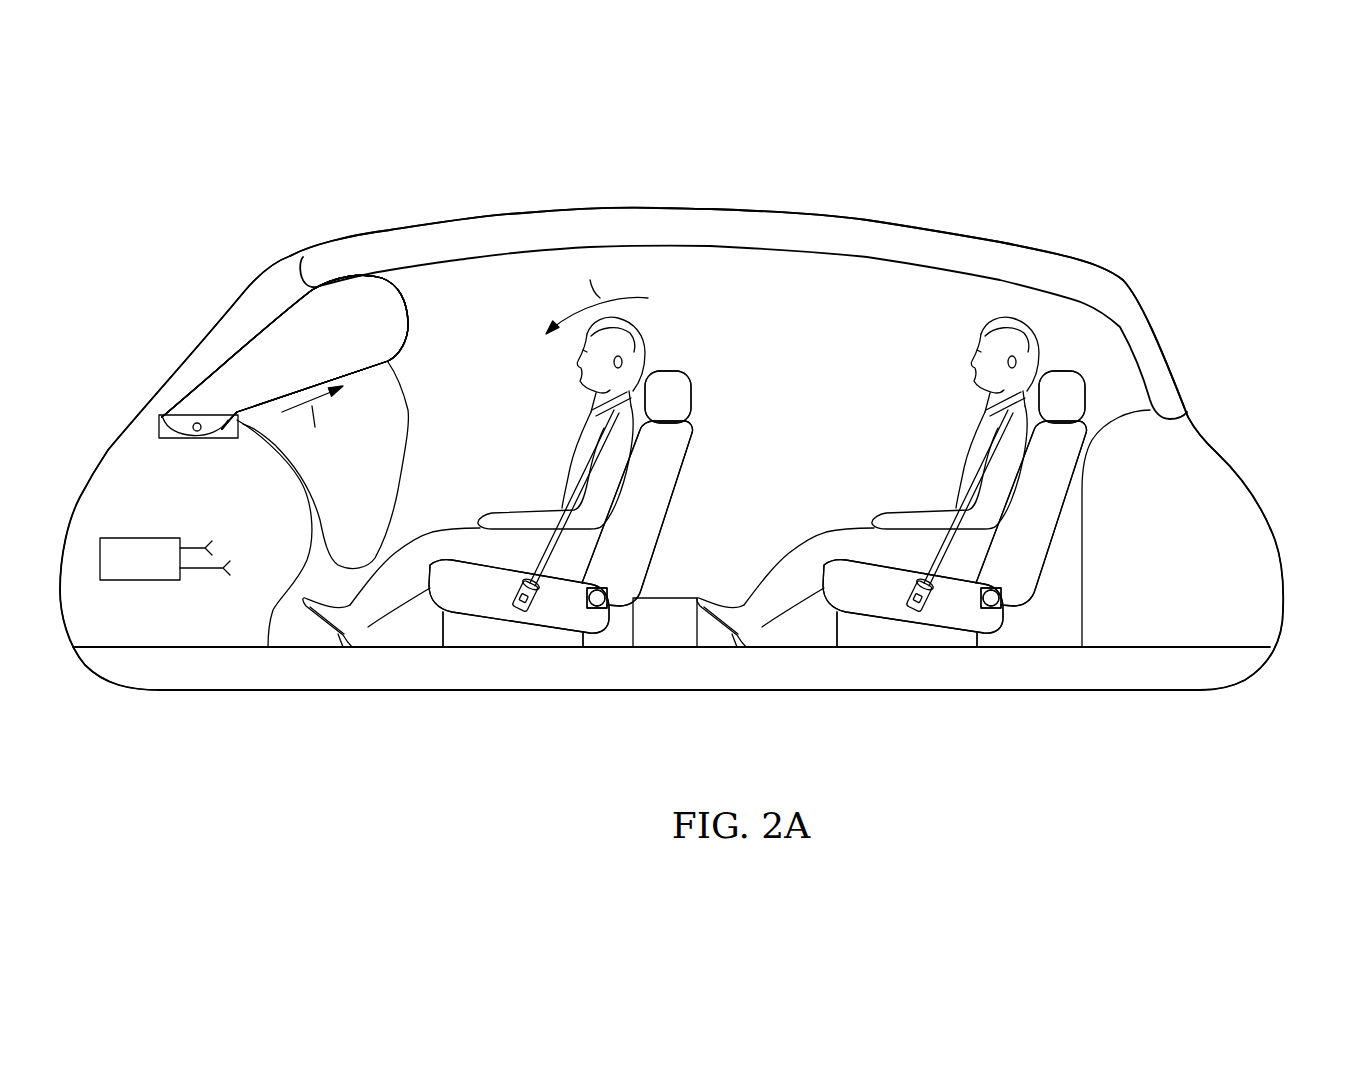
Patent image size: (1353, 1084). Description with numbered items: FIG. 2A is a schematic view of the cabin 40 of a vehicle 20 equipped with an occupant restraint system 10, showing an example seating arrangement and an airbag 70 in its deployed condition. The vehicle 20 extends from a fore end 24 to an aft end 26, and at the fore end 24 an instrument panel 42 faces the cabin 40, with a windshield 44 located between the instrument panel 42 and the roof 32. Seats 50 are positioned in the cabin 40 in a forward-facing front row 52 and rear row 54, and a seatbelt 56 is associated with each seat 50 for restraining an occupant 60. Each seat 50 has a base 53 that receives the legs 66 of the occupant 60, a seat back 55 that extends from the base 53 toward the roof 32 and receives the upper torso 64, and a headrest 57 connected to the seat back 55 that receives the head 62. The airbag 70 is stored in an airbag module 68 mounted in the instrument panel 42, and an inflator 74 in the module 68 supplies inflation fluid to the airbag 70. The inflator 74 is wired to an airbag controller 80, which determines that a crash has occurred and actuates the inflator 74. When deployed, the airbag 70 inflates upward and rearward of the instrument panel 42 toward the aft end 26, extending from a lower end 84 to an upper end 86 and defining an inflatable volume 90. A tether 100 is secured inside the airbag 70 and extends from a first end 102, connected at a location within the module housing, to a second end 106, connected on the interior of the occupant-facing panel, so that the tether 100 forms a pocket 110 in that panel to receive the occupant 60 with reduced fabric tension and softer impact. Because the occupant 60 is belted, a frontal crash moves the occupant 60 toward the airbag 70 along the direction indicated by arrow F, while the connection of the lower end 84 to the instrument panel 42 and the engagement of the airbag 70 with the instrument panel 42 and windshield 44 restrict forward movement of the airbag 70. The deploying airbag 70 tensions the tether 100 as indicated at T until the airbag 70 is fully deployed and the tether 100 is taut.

The occupant restraint system 10 is at (334, 698).
The vehicle 20 is at (1243, 572).
The fore end 24 is at (130, 388).
The aft end 26 is at (1222, 393).
The roof 32 is at (678, 211).
The cabin 40 is at (790, 407).
The instrument panel 42 is at (220, 502).
The windshield 44 is at (190, 353).
The seat 50 is at (508, 634).
The front row 52 is at (553, 655).
The seat base 53 is at (455, 562).
The rear row 54 is at (948, 655).
The seat back 55 is at (650, 458).
The seatbelt 56 is at (558, 506).
The headrest 57 is at (677, 372).
The occupant 60 is at (608, 440).
The head 62 is at (630, 350).
The upper torso 64 is at (594, 470).
The legs 66 is at (436, 545).
The airbag module 68 is at (174, 440).
The airbag 70 is at (420, 322).
The inflator 74 is at (160, 415).
The airbag controller 80 is at (140, 548).
The lower end 84 is at (358, 572).
The upper end 86 is at (405, 283).
The inflatable volume 90 is at (268, 343).
The tether 100 is at (357, 366).
The first end 102 is at (232, 410).
The second end 106 is at (390, 364).
The pocket 110 is at (403, 360).